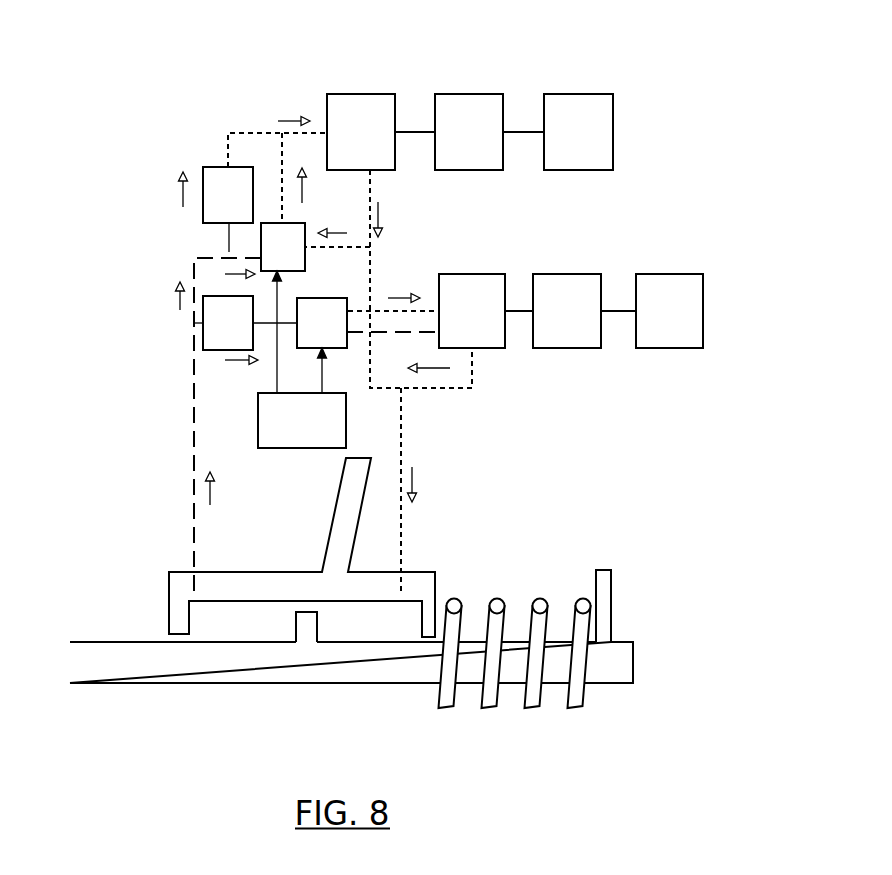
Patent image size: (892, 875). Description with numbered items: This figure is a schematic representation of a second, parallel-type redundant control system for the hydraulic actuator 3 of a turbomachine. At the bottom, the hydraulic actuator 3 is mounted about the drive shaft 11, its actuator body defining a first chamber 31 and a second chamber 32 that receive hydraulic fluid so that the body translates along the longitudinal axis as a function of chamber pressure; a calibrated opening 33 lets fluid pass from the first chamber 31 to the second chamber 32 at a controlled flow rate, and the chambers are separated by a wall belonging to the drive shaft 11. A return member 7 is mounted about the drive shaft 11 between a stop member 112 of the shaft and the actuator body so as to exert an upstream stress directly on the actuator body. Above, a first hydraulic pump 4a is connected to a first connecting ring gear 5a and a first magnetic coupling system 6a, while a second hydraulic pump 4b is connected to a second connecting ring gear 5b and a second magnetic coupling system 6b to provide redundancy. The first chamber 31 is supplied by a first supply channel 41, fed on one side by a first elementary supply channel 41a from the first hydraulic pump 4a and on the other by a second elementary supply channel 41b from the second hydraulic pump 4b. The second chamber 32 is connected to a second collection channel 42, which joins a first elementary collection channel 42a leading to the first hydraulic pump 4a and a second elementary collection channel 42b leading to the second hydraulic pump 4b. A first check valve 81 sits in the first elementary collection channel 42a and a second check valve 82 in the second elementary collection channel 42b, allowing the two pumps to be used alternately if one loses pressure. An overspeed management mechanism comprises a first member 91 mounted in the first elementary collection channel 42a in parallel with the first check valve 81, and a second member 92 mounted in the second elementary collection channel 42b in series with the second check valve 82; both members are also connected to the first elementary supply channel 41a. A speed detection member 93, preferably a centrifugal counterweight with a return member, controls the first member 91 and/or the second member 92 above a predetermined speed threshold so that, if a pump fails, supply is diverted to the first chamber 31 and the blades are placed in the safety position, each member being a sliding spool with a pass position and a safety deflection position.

The hydraulic actuator 3 is at (97, 598).
The first hydraulic pump 4a is at (361, 132).
The second hydraulic pump 4b is at (472, 311).
The first connecting ring gear 5a is at (449, 132).
The second connecting ring gear 5b is at (553, 311).
The first magnetic coupling system 6a is at (558, 132).
The second magnetic coupling system 6b is at (652, 311).
The return member 7 is at (485, 577).
The drive shaft 11 is at (102, 683).
The first chamber 31 is at (381, 629).
The second chamber 32 is at (258, 629).
The calibrated opening 33 is at (306, 621).
The first supply channel 41 is at (402, 507).
The first elementary supply channel 41a is at (372, 177).
The second elementary supply channel 41b is at (452, 390).
The second collection channel 42 is at (192, 520).
The first elementary collection channel 42a is at (242, 133).
The second elementary collection channel 42b is at (438, 310).
The first check valve 81 is at (228, 209).
The second check valve 82 is at (245, 323).
The first member 91 is at (283, 247).
The second member 92 is at (322, 323).
The speed detection member 93 is at (302, 359).
The stop member 112 is at (602, 570).